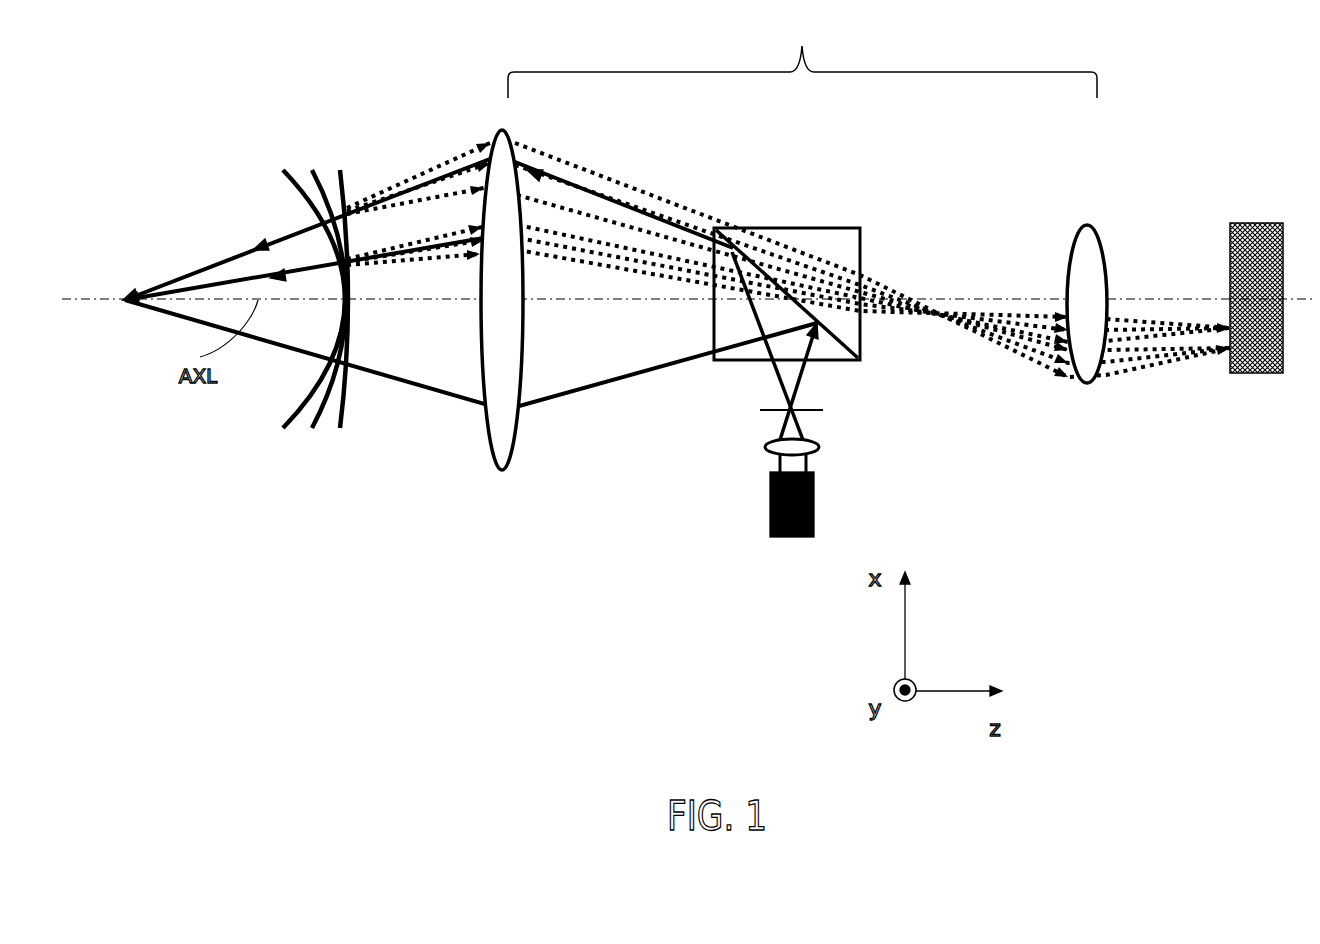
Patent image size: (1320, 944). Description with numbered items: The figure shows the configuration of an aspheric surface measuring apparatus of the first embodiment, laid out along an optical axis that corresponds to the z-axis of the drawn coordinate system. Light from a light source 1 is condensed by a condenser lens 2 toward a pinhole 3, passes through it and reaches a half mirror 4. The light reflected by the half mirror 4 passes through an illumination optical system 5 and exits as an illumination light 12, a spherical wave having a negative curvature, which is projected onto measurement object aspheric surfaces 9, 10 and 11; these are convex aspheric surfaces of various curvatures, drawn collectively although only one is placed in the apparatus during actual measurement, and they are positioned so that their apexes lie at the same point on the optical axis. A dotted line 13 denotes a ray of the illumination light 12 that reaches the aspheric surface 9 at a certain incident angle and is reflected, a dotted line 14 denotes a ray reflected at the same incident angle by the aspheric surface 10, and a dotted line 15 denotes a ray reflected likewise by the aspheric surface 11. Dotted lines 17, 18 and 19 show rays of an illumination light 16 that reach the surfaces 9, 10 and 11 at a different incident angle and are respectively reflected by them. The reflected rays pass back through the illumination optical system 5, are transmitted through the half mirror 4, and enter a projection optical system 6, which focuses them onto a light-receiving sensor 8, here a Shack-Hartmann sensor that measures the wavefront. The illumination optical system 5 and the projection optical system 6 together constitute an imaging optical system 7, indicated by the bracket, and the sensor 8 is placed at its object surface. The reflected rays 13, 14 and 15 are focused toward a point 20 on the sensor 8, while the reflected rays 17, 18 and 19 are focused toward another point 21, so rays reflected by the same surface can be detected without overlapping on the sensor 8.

The light source 1 is at (813, 485).
The condenser lens 2 is at (817, 437).
The pinhole 3 is at (813, 407).
The half mirror 4 is at (843, 340).
The illumination optical system 5 is at (508, 131).
The projection optical system 6 is at (1090, 227).
The imaging optical system 7 is at (802, 56).
The light-receiving sensor 8 is at (1260, 242).
The measurement object aspheric surface 9 is at (284, 430).
The measurement object aspheric surface 10 is at (312, 430).
The measurement object aspheric surface 11 is at (343, 428).
The illumination light 12 is at (278, 242).
The ray 13 is at (448, 157).
The ray 14 is at (443, 170).
The ray 15 is at (440, 193).
The illumination light 16 is at (238, 280).
The ray 17 is at (430, 262).
The ray 18 is at (442, 258).
The ray 19 is at (455, 262).
The point 20 is at (1227, 355).
The point 21 is at (1227, 325).